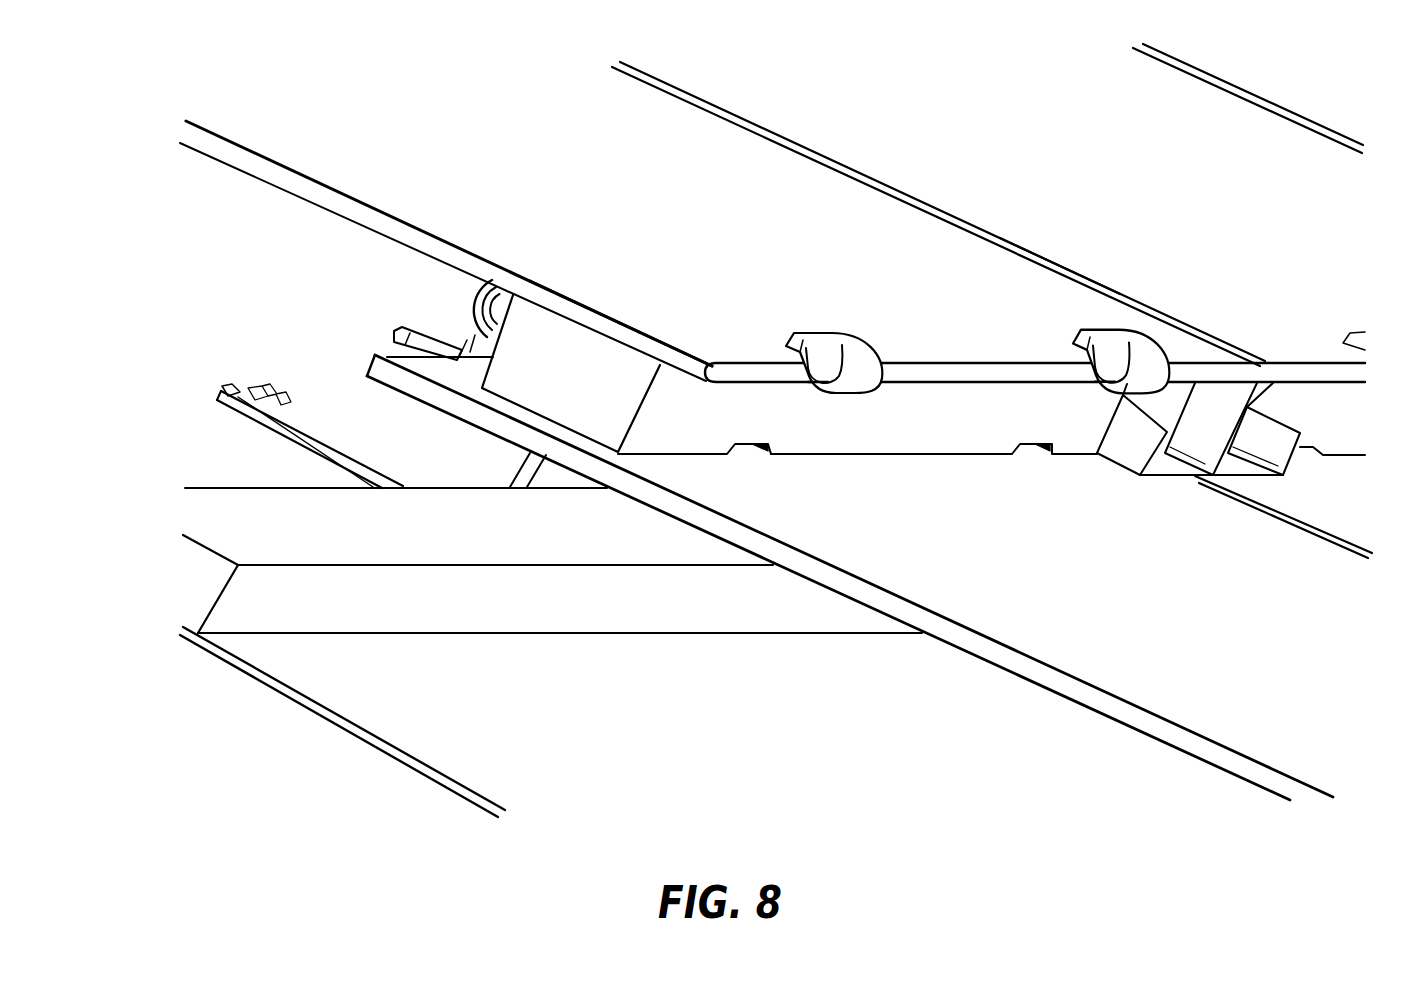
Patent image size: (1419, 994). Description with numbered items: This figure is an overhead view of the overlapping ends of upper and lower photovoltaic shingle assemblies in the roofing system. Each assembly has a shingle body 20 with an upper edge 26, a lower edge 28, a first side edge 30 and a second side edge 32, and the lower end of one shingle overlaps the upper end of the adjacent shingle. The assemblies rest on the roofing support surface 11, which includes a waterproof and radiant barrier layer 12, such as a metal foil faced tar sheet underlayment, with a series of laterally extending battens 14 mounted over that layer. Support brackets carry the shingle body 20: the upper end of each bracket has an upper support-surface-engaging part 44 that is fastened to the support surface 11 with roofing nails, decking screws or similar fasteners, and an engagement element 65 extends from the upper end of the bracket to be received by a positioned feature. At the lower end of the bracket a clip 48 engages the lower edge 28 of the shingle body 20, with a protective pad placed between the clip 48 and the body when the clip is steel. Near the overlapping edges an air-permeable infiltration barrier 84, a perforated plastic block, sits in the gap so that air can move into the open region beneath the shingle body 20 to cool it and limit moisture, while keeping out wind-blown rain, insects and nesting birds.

The shingle body 20 is at (663, 213).
The second side edge 32 is at (568, 303).
The first side edge 30 is at (1053, 270).
The clip 48 is at (846, 350).
The lower edge 28 is at (985, 374).
The air-permeable infiltration barrier 84 is at (885, 428).
The upper edge 26 is at (386, 358).
The engagement element 65 is at (393, 337).
The upper support-surface-engaging part 44 is at (332, 447).
The batten 14 is at (505, 608).
The roofing support surface 11 is at (458, 718).
The waterproof and radiant barrier layer 12 is at (362, 722).